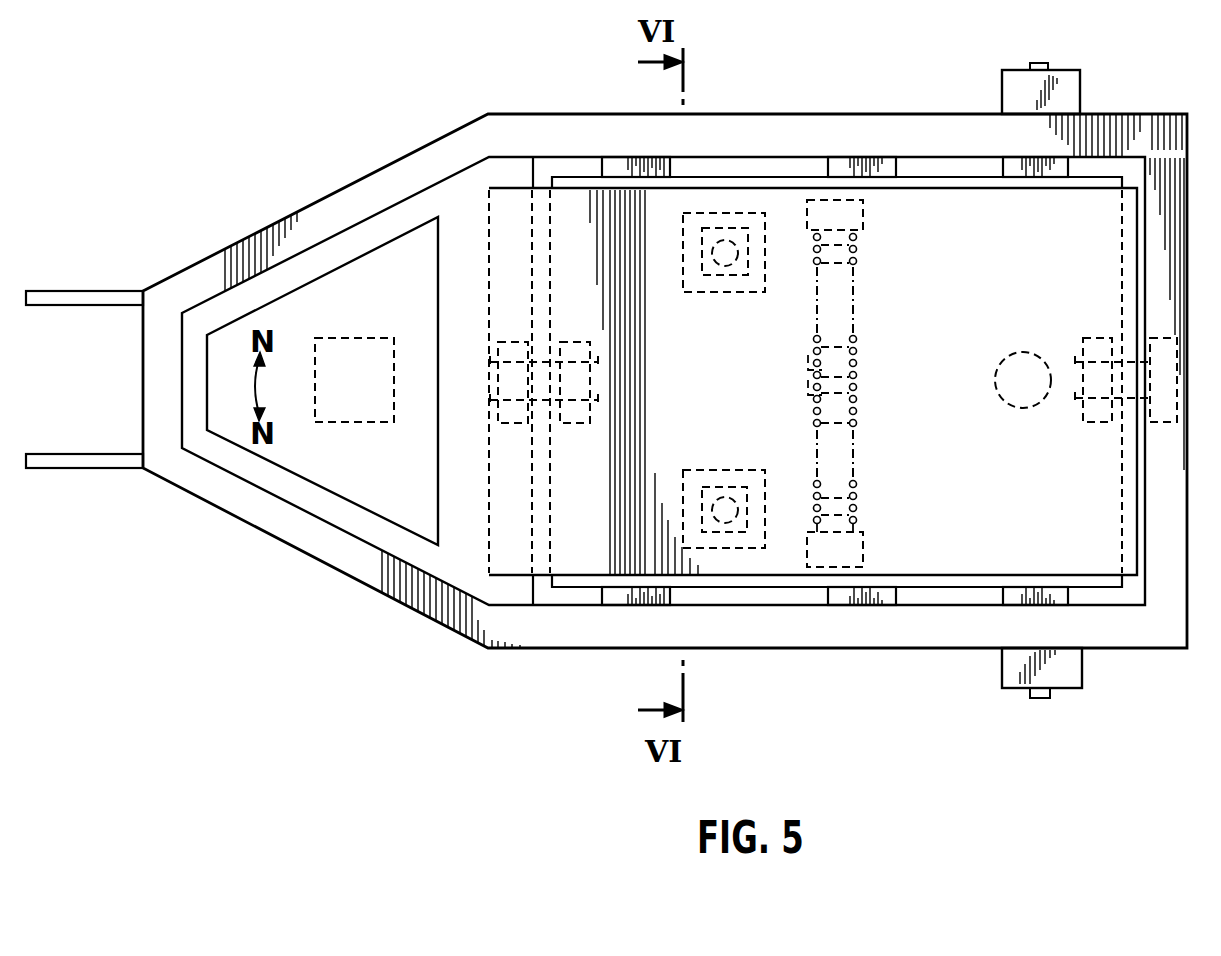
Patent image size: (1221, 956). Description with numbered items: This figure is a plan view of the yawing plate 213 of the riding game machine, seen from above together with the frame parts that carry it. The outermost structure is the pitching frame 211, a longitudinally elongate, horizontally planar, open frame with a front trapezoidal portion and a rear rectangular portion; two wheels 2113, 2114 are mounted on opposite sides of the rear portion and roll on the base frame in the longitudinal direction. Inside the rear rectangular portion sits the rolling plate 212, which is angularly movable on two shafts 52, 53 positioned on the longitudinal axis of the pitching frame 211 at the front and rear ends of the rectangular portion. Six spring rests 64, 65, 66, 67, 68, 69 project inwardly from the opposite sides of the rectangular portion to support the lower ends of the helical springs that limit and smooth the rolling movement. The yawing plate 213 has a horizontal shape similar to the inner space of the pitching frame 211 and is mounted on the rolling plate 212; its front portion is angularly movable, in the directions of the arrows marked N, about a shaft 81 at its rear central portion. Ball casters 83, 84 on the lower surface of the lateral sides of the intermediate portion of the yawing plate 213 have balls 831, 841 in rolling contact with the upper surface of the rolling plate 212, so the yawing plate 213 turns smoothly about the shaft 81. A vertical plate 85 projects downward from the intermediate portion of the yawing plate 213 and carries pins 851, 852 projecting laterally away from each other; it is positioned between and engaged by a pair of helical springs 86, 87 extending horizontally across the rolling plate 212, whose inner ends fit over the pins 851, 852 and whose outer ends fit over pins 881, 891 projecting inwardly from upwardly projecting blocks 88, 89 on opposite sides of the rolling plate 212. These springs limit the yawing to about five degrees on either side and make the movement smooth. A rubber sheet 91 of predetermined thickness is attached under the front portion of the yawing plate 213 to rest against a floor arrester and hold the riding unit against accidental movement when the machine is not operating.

The pitching frame 211 is at (606, 351).
The rolling plate 212 is at (813, 431).
The yawing plate 213 is at (837, 326).
The wheel 2113 is at (1096, 84).
The wheel 2114 is at (1091, 684).
The spring rest 64 is at (631, 148).
The spring rest 65 is at (624, 616).
The spring rest 66 is at (849, 148).
The spring rest 67 is at (857, 615).
The spring rest 68 is at (1018, 148).
The spring rest 69 is at (1025, 617).
The rubber sheet 91 is at (354, 409).
The shaft 52 is at (544, 408).
The shaft 53 is at (1121, 406).
The shaft 81 is at (1023, 355).
The ball caster 83 is at (703, 275).
The ball 831 is at (732, 288).
The ball caster 84 is at (714, 489).
The ball 841 is at (742, 476).
The vertical plate 85 is at (870, 381).
The pin 851 is at (780, 355).
The pin 852 is at (780, 395).
The helical spring 86 is at (873, 302).
The helical spring 87 is at (869, 441).
The block 88 is at (863, 217).
The pin 881 is at (872, 254).
The block 89 is at (868, 548).
The pin 891 is at (866, 502).